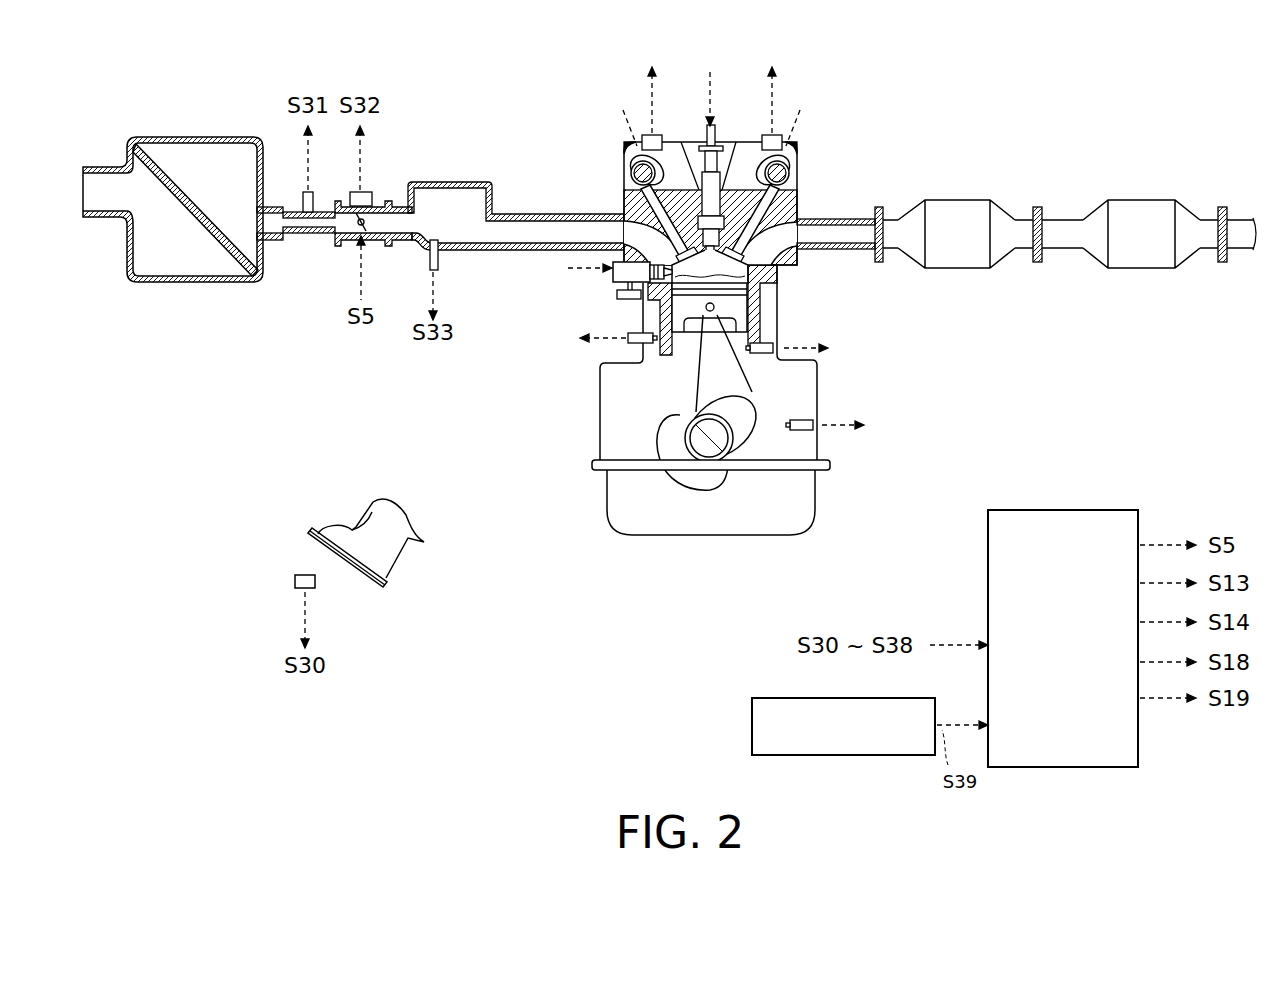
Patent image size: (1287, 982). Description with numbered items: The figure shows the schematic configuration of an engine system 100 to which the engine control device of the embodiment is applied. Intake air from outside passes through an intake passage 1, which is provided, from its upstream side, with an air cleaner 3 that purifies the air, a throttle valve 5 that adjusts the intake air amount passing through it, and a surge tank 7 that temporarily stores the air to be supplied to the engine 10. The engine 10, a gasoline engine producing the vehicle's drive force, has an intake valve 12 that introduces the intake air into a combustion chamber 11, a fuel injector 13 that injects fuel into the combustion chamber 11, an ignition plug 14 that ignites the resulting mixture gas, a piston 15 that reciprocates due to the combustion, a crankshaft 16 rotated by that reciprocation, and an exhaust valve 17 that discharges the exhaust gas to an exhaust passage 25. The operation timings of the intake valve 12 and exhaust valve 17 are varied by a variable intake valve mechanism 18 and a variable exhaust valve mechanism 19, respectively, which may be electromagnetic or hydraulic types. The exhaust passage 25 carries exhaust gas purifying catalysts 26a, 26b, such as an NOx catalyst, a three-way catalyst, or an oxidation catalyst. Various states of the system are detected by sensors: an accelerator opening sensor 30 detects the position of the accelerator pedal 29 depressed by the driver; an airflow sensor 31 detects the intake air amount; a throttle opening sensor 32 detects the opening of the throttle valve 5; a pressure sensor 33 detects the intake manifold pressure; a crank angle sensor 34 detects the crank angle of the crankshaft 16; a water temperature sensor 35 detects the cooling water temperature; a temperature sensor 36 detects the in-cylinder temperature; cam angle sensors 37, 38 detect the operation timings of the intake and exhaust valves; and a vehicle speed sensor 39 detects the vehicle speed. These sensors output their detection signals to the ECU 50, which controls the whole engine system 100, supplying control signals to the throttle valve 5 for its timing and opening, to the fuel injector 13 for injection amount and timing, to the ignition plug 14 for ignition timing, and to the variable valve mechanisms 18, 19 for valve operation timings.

The intake passage 1 is at (306, 242).
The air cleaner 3 is at (158, 138).
The throttle valve 5 is at (364, 228).
The surge tank 7 is at (450, 181).
The engine 10 is at (718, 317).
The combustion chamber 11 is at (760, 300).
The intake valve 12 is at (642, 226).
The fuel injector 13 is at (620, 283).
The ignition plug 14 is at (719, 152).
The piston 15 is at (755, 315).
The crankshaft 16 is at (703, 452).
The exhaust valve 17 is at (790, 250).
The variable intake valve mechanism 18 is at (631, 174).
The variable exhaust valve mechanism 19 is at (790, 173).
The exhaust passage 25 is at (846, 252).
The exhaust gas purifying catalyst 26a is at (964, 199).
The exhaust gas purifying catalyst 26b is at (1146, 199).
The accelerator pedal 29 is at (306, 540).
The accelerator opening sensor 30 is at (295, 581).
The airflow sensor 31 is at (303, 196).
The throttle opening sensor 32 is at (372, 194).
The pressure sensor 33 is at (439, 262).
The crank angle sensor 34 is at (806, 430).
The water temperature sensor 35 is at (630, 345).
The temperature sensor 36 is at (770, 356).
The cam angle sensor 37 is at (660, 136).
The cam angle sensor 38 is at (764, 136).
The vehicle speed sensor 39 is at (752, 724).
The ECU 50 is at (1052, 509).
The engine system 100 is at (958, 142).